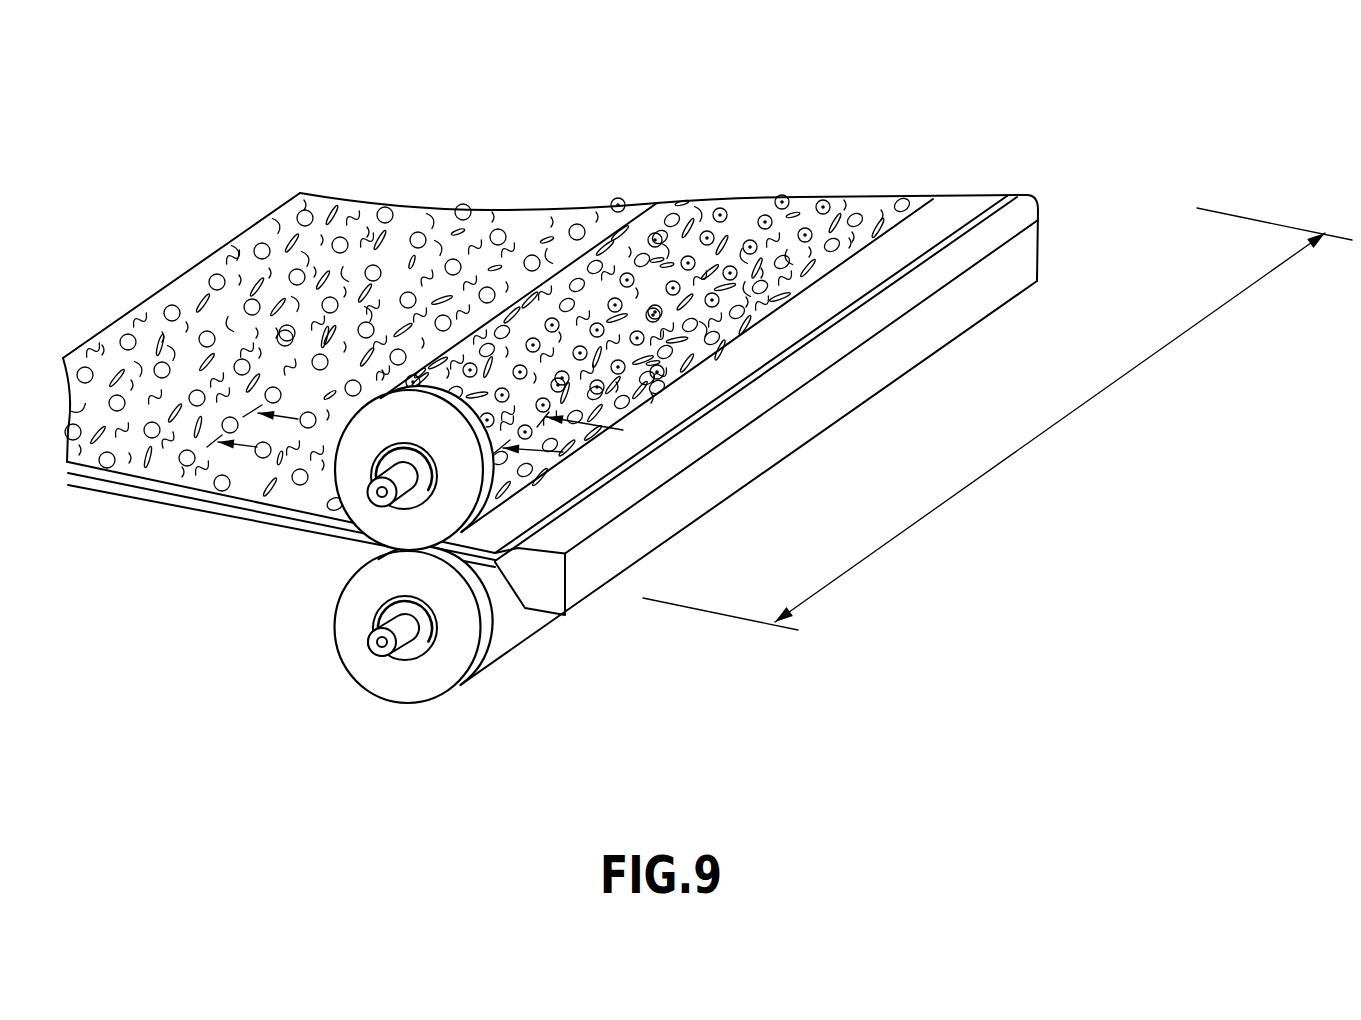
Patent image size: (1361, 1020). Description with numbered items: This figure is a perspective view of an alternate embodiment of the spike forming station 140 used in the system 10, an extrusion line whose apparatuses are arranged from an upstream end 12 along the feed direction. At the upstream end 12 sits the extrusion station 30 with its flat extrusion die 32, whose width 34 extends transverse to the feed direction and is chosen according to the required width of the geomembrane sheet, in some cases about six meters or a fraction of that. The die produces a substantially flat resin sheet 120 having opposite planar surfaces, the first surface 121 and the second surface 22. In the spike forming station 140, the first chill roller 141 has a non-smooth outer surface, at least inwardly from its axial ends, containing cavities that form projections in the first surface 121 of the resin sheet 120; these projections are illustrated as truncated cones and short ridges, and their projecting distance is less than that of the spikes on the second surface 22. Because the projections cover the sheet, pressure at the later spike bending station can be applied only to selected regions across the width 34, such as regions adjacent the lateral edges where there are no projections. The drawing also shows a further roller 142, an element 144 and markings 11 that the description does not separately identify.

The extrusion station 30 is at (630, 367).
The upstream end 12 is at (808, 436).
The flat extrusion die 32 is at (948, 232).
The second surface 22 is at (103, 493).
The resin sheet 120 is at (393, 247).
The first surface 121 is at (522, 238).
The spike forming station 140 is at (735, 230).
The first chill roller 141 is at (327, 508).
The lower roller 142 is at (453, 665).
The roller nip 144 is at (407, 551).
The system 10 is at (576, 457).
The embossing spacing 11 is at (262, 431).
The width 34 is at (997, 419).